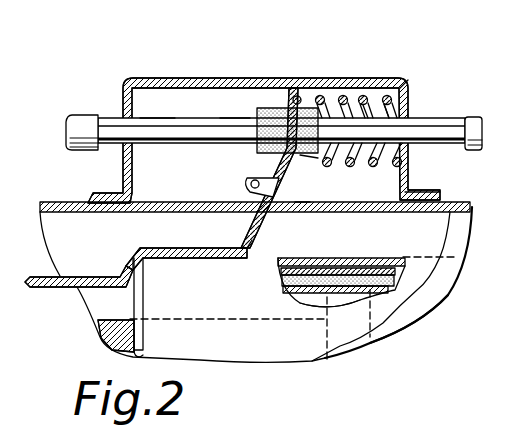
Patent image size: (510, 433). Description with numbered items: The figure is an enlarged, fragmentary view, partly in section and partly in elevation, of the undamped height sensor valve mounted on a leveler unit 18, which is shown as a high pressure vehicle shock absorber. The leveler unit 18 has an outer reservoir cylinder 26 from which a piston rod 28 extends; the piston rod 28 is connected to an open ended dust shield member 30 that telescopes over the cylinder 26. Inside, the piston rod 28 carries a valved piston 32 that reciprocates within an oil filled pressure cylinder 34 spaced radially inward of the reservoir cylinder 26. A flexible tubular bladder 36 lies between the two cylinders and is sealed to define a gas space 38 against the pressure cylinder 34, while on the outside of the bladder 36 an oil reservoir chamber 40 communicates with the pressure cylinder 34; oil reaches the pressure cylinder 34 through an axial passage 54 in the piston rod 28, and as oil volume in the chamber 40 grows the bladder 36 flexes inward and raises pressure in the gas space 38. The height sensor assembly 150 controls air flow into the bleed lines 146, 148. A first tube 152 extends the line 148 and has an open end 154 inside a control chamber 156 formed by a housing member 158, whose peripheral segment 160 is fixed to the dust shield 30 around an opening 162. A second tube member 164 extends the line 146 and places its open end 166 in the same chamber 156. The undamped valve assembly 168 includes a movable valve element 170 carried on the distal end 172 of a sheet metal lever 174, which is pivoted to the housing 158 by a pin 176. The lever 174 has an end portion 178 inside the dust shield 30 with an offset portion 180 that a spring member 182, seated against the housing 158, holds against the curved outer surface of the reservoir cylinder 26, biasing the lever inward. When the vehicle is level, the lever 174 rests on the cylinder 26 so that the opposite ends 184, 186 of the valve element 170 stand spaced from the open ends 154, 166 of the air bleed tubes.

The leveler unit 18 is at (403, 332).
The outer reservoir cylinder 26 is at (383, 285).
The piston rod 28 is at (123, 325).
The dust shield member 30 is at (70, 202).
The valved piston 32 is at (340, 300).
The pressure cylinder 34 is at (300, 297).
The flexible tubular bladder 36 is at (307, 268).
The gas space 38 is at (362, 283).
The oil reservoir chamber 40 is at (327, 268).
The axial passage 54 is at (140, 350).
The air bleed line 146 is at (472, 118).
The air bleed line 148 is at (84, 125).
The height sensor assembly 150 is at (412, 93).
The first tube 152 is at (173, 130).
The open end 154 is at (245, 118).
The control chamber 156 is at (386, 92).
The housing member 158 is at (293, 105).
The peripheral segment 160 is at (430, 200).
The opening 162 is at (158, 203).
The second tube member 164 is at (450, 120).
The open end 166 is at (319, 158).
The undamped valve assembly 168 is at (248, 238).
The movable valve element 170 is at (328, 108).
The distal end 172 is at (308, 110).
The sheet metal lever 174 is at (301, 203).
The pin 176 is at (246, 183).
The end portion 178 is at (91, 277).
The offset portion 180 is at (128, 258).
The spring member 182 is at (410, 90).
The end of movable valve element 184 is at (255, 108).
The end of movable valve element 186 is at (364, 95).